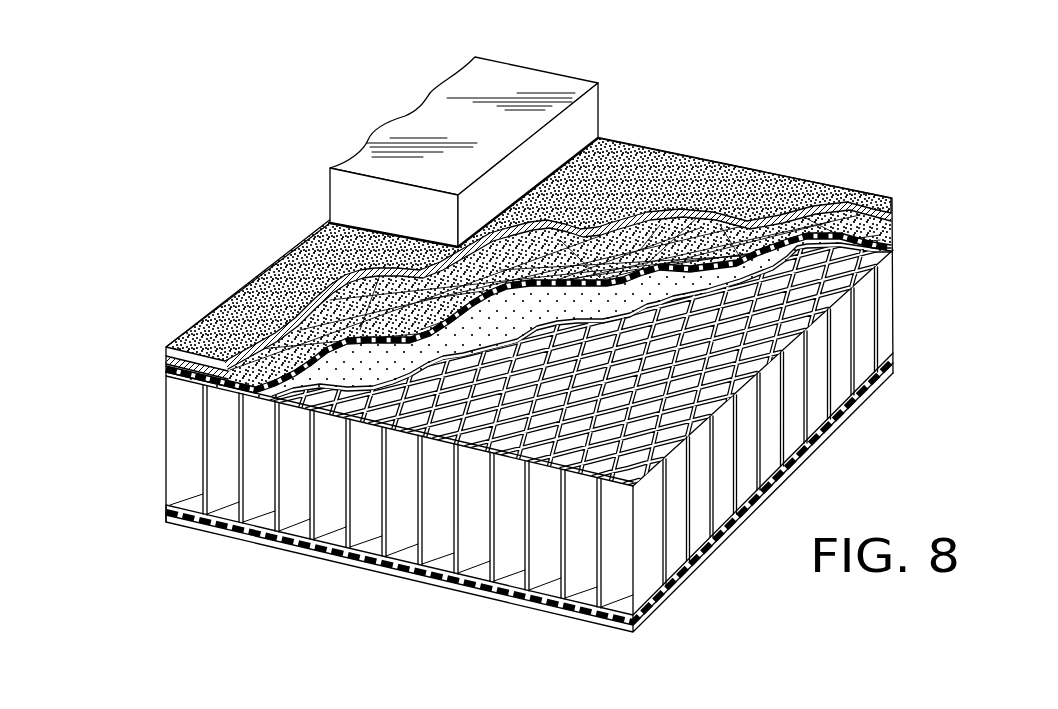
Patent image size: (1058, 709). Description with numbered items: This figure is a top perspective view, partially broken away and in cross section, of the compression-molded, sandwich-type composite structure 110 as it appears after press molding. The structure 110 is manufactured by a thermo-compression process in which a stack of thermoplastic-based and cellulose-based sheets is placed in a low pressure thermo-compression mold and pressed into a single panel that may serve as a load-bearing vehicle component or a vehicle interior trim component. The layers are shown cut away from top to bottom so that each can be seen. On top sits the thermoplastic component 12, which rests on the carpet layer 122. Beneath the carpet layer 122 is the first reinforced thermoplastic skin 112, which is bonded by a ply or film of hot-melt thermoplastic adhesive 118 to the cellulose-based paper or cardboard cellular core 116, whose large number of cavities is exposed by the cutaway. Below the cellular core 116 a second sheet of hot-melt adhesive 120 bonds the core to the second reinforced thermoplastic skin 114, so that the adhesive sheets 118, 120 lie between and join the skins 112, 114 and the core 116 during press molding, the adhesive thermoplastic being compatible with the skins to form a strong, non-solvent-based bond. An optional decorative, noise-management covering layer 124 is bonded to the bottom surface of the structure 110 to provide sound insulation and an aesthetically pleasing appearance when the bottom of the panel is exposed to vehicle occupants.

The compression-molded, sandwich-type composite structure 110 is at (794, 94).
The thermoplastic component 12 is at (617, 108).
The carpet layer 122 is at (166, 352).
The first reinforced thermoplastic skin 112 is at (166, 367).
The hot-melt adhesive sheet 118 is at (318, 388).
The cellular core 116 is at (163, 455).
The hot-melt adhesive sheet 120 is at (177, 497).
The covering layer 124 is at (203, 527).
The second reinforced thermoplastic skin 114 is at (170, 518).